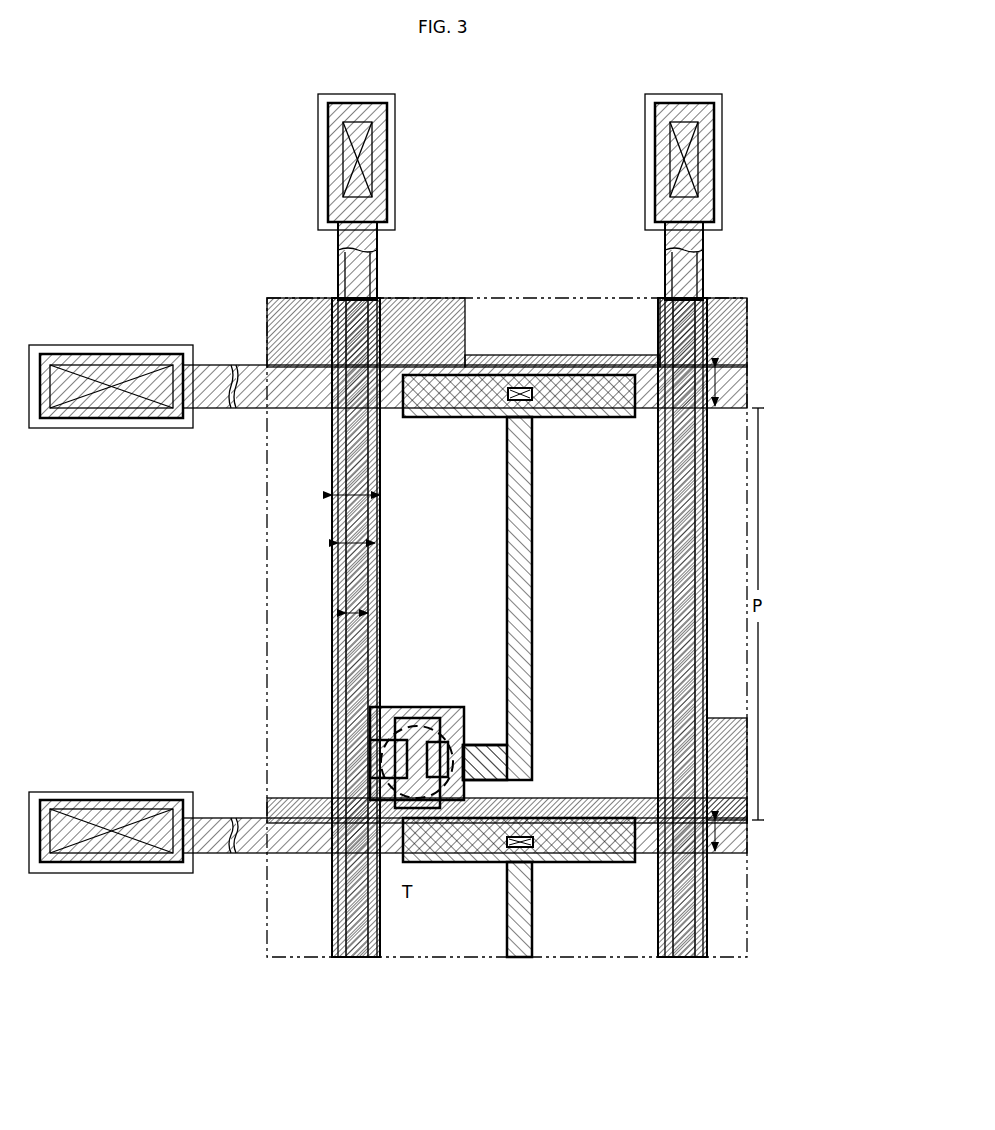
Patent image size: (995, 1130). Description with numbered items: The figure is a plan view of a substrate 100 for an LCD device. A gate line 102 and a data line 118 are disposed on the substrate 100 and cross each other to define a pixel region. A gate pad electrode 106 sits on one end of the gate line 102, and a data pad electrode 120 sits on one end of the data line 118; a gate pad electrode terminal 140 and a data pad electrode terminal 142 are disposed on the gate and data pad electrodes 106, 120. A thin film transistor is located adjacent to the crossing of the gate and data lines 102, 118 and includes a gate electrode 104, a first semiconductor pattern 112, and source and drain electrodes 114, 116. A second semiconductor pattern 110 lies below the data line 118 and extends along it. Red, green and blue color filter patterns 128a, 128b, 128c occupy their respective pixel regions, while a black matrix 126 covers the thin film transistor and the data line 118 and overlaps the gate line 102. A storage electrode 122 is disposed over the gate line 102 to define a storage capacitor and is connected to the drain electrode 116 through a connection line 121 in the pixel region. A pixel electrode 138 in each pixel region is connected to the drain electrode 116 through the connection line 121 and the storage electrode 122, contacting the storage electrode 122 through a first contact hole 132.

The substrate 100 is at (182, 162).
The gate line 102 is at (725, 386).
The gate electrode 104 is at (444, 707).
The gate pad electrode 106 is at (73, 418).
The second semiconductor pattern 110 is at (370, 612).
The first semiconductor pattern 112 is at (417, 718).
The source electrode 114 is at (383, 707).
The drain electrode 116 is at (534, 758).
The data line 118 is at (356, 627).
The data pad electrode 120 is at (395, 110).
The connection line 121 is at (534, 590).
The storage electrode 122 is at (590, 418).
The black matrix 126 is at (337, 495).
The red color filter pattern 128a is at (292, 658).
The green color filter pattern 128b is at (595, 328).
The blue color filter pattern 128c is at (735, 497).
The first contact hole 132 is at (514, 386).
The pixel electrode 138 is at (660, 625).
The gate pad electrode terminal 140 is at (165, 345).
The data pad electrode terminal 142 is at (318, 213).